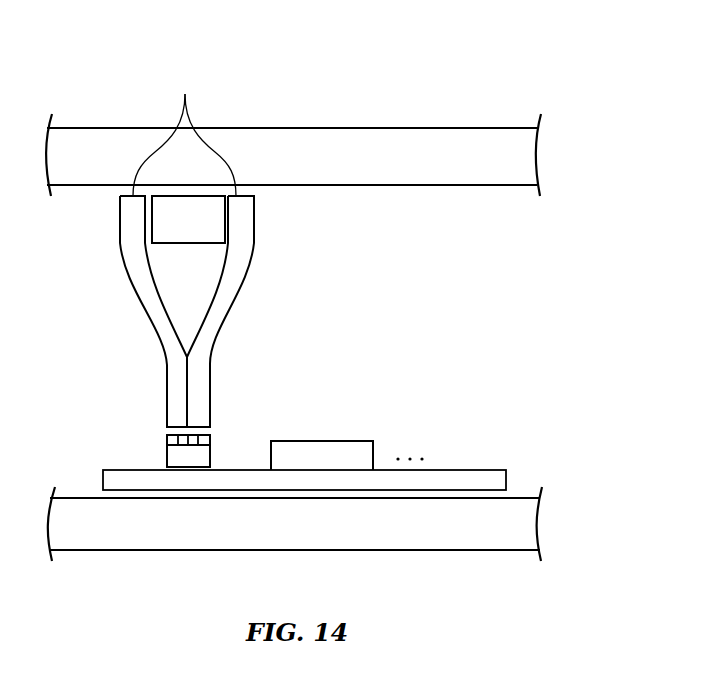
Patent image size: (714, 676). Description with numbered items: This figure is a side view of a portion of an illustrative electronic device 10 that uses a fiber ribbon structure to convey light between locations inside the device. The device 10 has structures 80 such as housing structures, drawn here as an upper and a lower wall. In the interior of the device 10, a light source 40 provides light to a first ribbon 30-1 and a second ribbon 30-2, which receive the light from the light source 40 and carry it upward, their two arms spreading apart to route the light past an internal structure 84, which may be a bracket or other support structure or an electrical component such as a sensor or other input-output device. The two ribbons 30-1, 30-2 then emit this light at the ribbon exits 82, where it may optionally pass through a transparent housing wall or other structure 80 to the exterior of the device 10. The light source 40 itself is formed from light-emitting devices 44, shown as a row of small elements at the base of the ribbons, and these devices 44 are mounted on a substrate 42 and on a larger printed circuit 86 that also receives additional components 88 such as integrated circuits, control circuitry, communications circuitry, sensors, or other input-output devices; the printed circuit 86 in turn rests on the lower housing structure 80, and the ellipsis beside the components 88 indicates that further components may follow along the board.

The electronic device 10 is at (420, 65).
The housing structures 80 is at (472, 145).
The ribbon exits 82 is at (184, 135).
The structure 84 is at (212, 222).
The first ribbon 30-1 is at (145, 292).
The second ribbon 30-2 is at (218, 308).
The light source 40 is at (148, 448).
The light-emitting devices 44 is at (200, 441).
The substrate 42 is at (210, 458).
The printed circuit board 86 is at (352, 478).
The additional components 88 is at (342, 447).